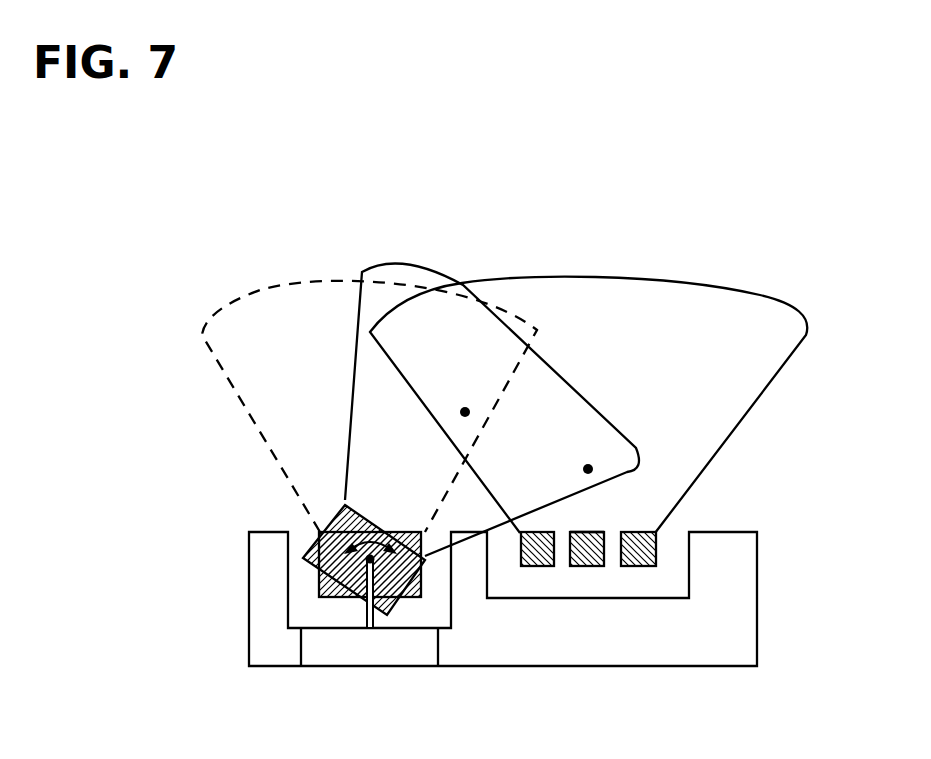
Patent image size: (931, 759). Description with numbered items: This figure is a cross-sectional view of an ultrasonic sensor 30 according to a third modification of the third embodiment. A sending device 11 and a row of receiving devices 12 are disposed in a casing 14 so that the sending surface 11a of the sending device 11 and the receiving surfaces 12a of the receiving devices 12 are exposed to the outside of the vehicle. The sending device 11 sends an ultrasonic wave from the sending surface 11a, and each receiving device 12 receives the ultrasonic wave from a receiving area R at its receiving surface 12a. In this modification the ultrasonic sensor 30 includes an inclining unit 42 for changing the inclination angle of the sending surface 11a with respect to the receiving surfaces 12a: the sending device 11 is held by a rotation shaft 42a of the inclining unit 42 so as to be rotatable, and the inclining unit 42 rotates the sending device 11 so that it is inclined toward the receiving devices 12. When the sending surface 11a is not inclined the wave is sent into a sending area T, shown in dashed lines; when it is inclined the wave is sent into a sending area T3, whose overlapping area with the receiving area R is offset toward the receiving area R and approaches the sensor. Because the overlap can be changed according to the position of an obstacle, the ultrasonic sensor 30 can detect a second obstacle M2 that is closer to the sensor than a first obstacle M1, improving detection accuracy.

The ultrasonic sensor 30 is at (694, 166).
The casing 14 is at (757, 597).
The inclining unit 42 is at (372, 652).
The rotation shaft 42a is at (372, 570).
The sending device 11 is at (345, 586).
The sending surface 11a is at (368, 512).
The receiving devices 12 is at (590, 565).
The receiving surface 12a is at (587, 533).
The receiving area R is at (711, 283).
The sending area T is at (258, 287).
The sending area T3 is at (425, 285).
The first obstacle M1 is at (464, 410).
The second obstacle M2 is at (585, 468).